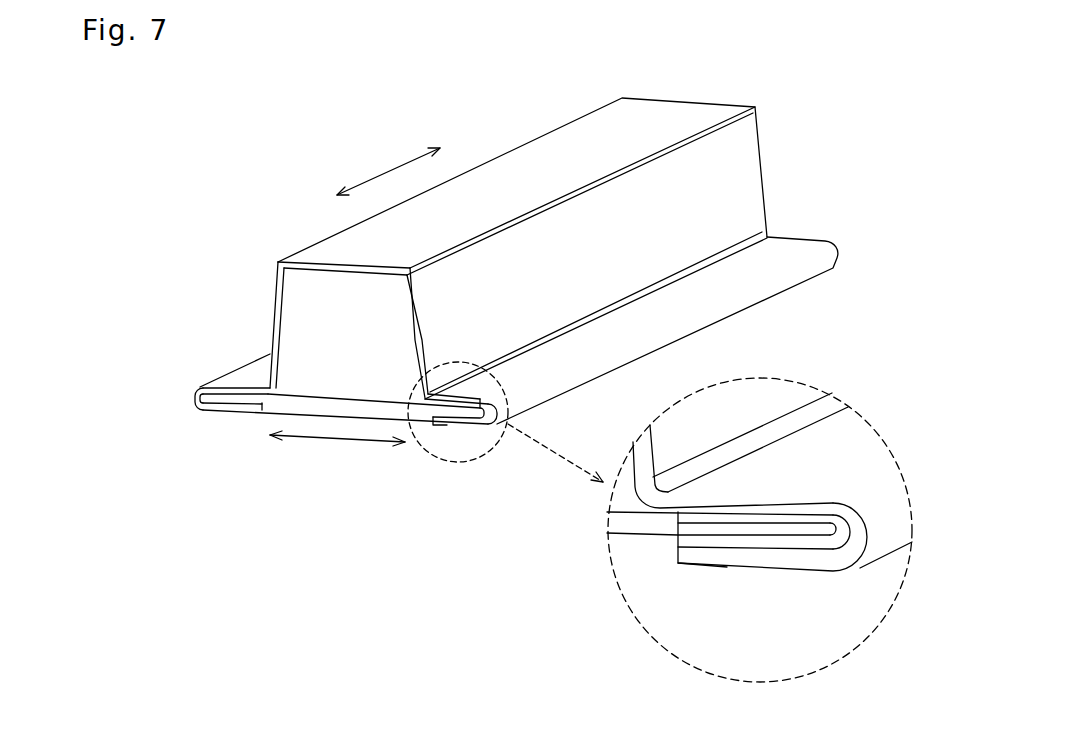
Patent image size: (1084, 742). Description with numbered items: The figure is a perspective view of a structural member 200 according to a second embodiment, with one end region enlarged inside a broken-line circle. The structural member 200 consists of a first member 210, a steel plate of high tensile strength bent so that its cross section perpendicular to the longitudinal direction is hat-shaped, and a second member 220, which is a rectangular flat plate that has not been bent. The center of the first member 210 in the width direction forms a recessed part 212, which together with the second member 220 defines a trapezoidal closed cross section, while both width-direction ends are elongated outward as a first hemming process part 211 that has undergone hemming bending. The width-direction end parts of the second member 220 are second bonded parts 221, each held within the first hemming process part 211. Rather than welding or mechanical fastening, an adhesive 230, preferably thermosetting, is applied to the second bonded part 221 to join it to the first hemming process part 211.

The structural member 200 is at (806, 140).
The first member 210 is at (330, 247).
The first hemming process part 211 is at (233, 375).
The recessed part 212 is at (272, 332).
The second member 220 is at (265, 407).
The second bonded part 221 is at (227, 401).
The adhesive 230 is at (197, 408).